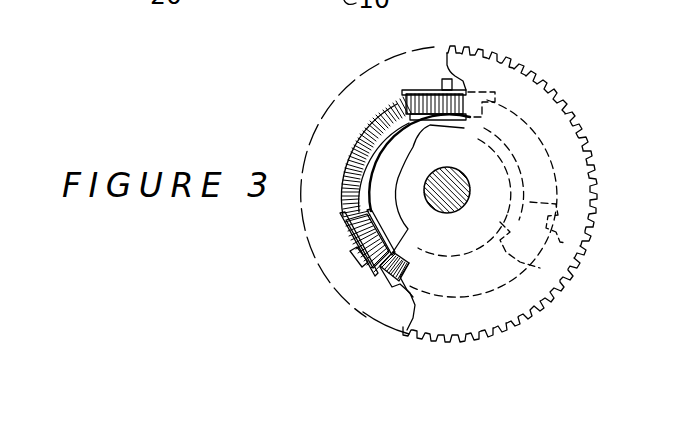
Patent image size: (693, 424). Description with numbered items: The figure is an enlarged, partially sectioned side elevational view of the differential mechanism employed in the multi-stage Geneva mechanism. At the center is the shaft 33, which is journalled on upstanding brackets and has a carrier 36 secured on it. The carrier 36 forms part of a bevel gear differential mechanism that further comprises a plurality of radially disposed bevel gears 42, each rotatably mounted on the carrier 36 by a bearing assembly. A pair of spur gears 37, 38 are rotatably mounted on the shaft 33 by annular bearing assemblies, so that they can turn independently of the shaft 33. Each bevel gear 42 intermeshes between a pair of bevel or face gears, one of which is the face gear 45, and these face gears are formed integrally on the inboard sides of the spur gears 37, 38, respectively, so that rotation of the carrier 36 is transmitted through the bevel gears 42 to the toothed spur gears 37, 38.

The shaft 33 is at (455, 187).
The carrier 36 is at (395, 172).
The spur gear 37 is at (368, 285).
The spur gear 38 is at (566, 194).
The bevel gear 42 is at (423, 93).
The bevel or face gear 45 is at (383, 124).